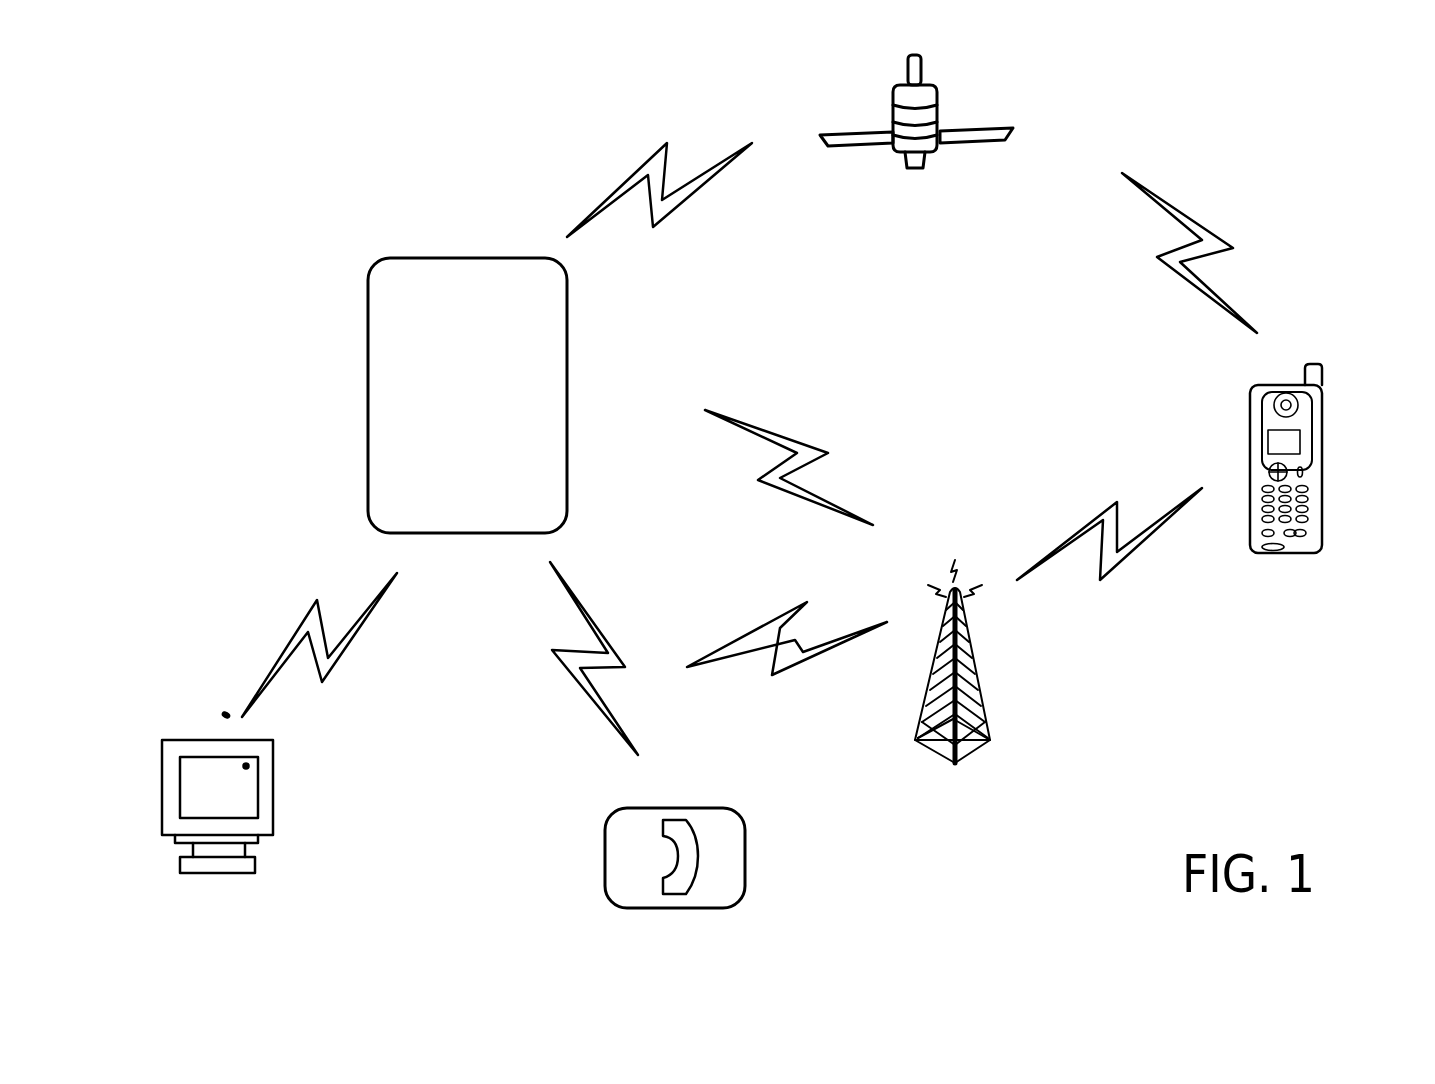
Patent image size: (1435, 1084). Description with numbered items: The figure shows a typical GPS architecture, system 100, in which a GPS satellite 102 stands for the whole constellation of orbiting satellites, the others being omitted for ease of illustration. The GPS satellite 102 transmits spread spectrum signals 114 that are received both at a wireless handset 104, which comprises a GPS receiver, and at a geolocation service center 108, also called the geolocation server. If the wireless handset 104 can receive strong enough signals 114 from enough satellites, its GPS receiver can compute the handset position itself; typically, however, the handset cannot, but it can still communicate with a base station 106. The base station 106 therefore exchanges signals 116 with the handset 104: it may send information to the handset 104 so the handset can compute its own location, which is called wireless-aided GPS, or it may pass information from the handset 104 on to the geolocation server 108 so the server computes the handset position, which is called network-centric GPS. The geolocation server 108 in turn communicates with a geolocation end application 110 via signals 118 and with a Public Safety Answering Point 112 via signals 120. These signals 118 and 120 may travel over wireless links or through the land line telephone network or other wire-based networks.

The system 100 is at (370, 142).
The GPS satellite 102 is at (975, 131).
The wireless handset 104 is at (1325, 462).
The base station 106 is at (990, 710).
The geolocation service center 108 is at (467, 258).
The geolocation end application 110 is at (225, 740).
The Public Safety Answering Point 112 is at (650, 808).
The spread spectrum signals 114 is at (645, 165).
The signals 116 is at (748, 425).
The signals 118 is at (302, 612).
The signals 120 is at (575, 598).